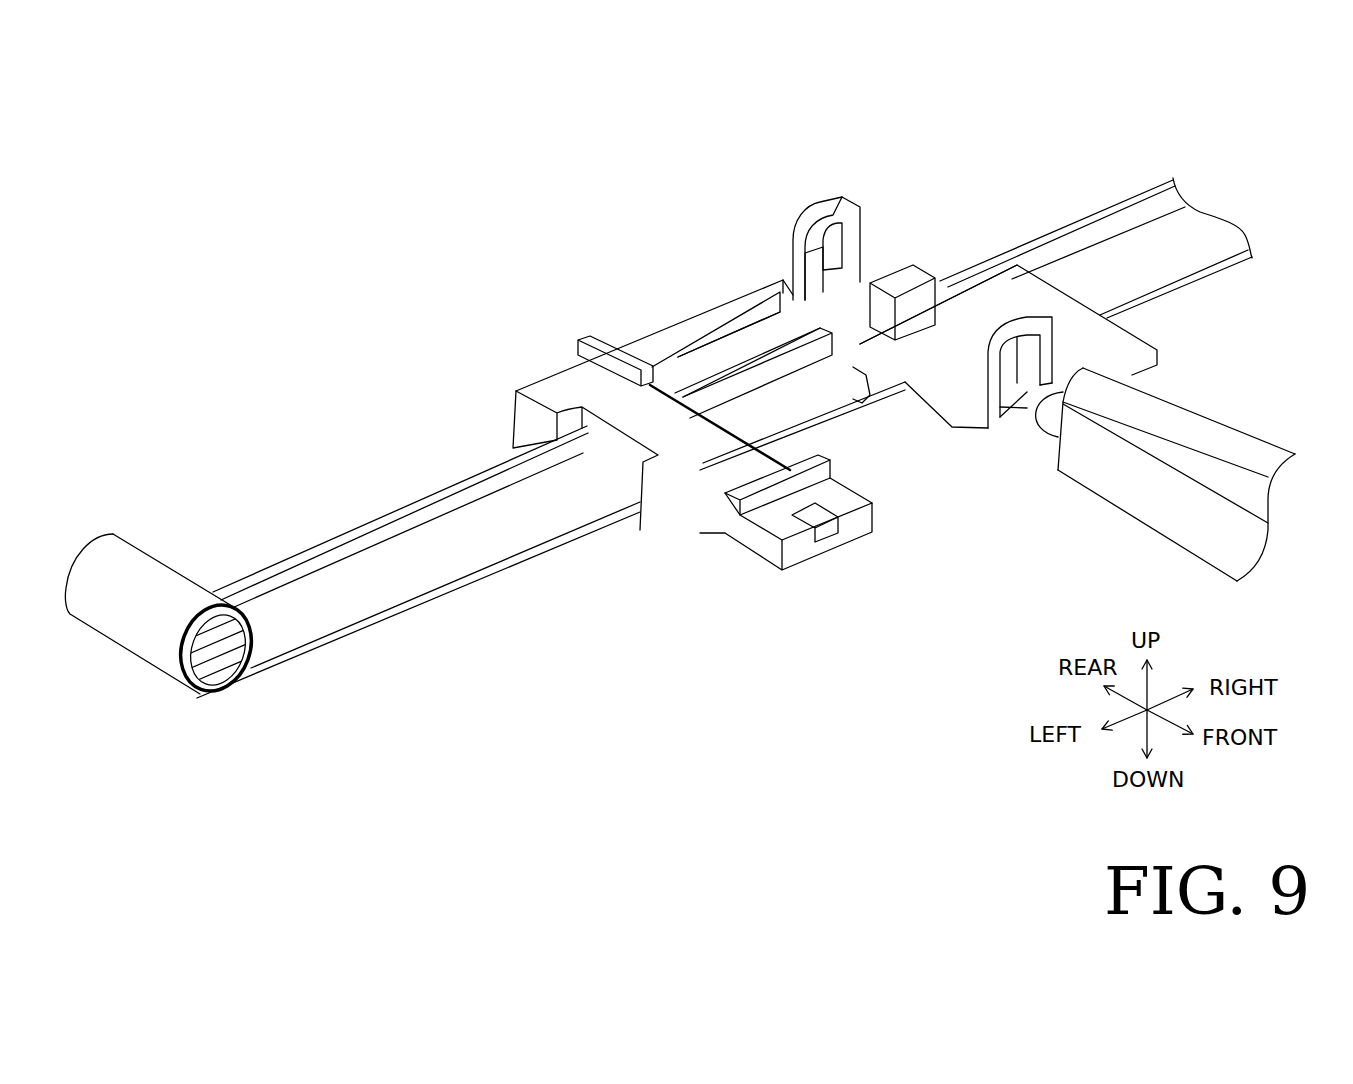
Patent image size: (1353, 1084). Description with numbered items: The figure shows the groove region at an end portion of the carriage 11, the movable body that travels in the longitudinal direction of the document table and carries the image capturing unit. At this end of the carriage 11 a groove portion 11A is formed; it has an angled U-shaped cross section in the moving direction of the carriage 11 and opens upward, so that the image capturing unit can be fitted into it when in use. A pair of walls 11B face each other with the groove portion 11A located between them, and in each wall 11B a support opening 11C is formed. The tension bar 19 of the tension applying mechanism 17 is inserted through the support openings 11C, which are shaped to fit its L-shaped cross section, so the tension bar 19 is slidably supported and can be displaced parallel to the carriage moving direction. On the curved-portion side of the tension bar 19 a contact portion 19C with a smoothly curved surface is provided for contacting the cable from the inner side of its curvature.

The carriage 11 is at (1203, 398).
The groove portion 11A is at (735, 355).
The walls 11B is at (652, 400).
The support opening 11C is at (570, 410).
The tension applying mechanism 17 is at (753, 272).
The tension bar 19 is at (403, 621).
The contact portion 19C is at (141, 570).